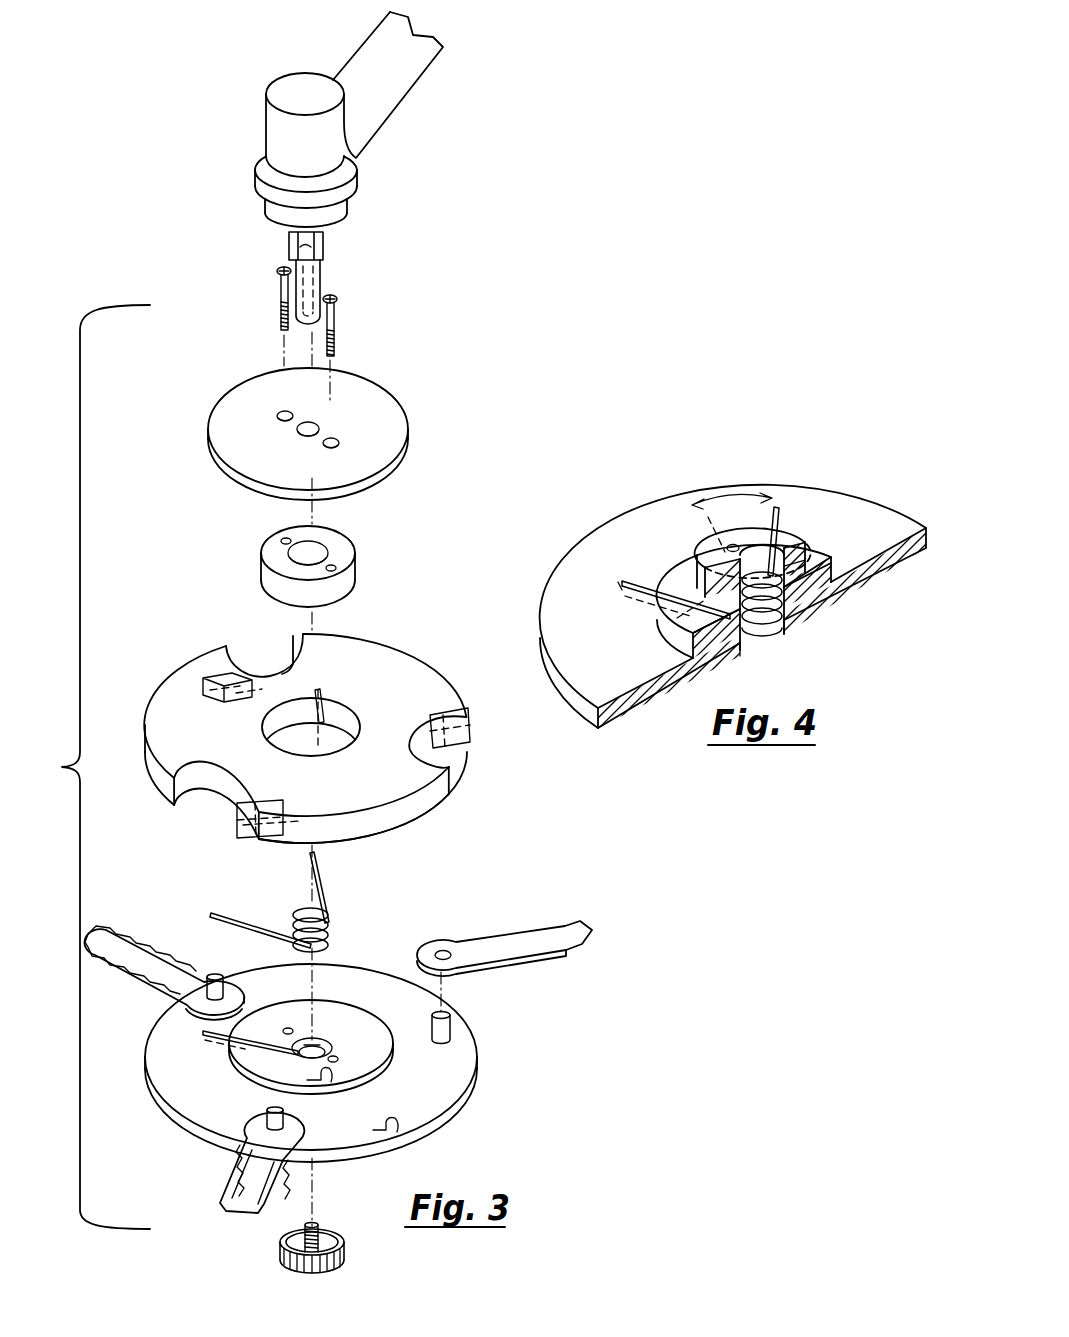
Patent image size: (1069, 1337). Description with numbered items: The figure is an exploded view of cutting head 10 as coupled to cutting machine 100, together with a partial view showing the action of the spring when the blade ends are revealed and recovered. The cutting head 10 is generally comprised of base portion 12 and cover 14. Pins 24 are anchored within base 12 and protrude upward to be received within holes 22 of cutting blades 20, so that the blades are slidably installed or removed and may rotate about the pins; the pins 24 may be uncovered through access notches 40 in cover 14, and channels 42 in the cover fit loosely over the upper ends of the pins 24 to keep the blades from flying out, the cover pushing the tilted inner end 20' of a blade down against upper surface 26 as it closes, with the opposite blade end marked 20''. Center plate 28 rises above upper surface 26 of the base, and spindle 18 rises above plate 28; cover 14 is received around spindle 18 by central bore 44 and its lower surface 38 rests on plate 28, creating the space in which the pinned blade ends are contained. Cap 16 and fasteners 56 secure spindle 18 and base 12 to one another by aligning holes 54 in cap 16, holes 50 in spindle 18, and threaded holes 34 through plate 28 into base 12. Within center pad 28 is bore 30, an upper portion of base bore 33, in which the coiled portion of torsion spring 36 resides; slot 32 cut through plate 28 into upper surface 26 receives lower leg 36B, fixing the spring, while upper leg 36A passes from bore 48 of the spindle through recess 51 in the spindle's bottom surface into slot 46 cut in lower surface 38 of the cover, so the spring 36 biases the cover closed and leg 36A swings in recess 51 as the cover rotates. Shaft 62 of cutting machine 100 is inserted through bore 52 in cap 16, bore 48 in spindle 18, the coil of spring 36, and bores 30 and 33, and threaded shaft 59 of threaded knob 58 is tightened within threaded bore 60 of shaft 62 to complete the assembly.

In FIG. 3, the cutting head 10 is at (62, 767).
In FIG. 3, the cutting machine 100 is at (396, 97).
In FIG. 3, the shaft 62 is at (295, 258).
In FIG. 3, the threaded bore 60 is at (310, 280).
In FIG. 3, the fasteners 56 is at (283, 302).
In FIG. 3, the cap 16 is at (370, 393).
In FIG. 3, the bore 52 is at (302, 434).
In FIG. 3, the holes 54 is at (281, 411).
In FIG. 3, the spindle 18 is at (343, 540).
In FIG. 4, the spindle 18 is at (795, 542).
In FIG. 3, the bore 48 is at (291, 554).
In FIG. 3, the holes 50 is at (283, 540).
In FIG. 3, the cover 14 is at (433, 800).
In FIG. 3, the lower surface 38 is at (393, 834).
In FIG. 3, the access notches 40 is at (277, 670).
In FIG. 3, the channels 42 is at (214, 669).
In FIG. 3, the central bore 44 is at (330, 756).
In FIG. 3, the slot 46 is at (322, 690).
In FIG. 3, the torsion spring 36 is at (329, 928).
In FIG. 4, the torsion spring 36 is at (786, 624).
In FIG. 3, the upper leg 36A is at (322, 880).
In FIG. 4, the upper leg 36A is at (778, 520).
In FIG. 3, the lower leg 36B is at (211, 914).
In FIG. 4, the lower leg 36B is at (677, 618).
In FIG. 3, the cutting blades 20 is at (354, 1057).
In FIG. 3, the inner end 20' is at (457, 905).
In FIG. 3, the lever free end 20'' is at (604, 977).
In FIG. 3, the holes 22 is at (441, 950).
In FIG. 3, the pins 24 is at (215, 978).
In FIG. 3, the base portion 12 is at (458, 1102).
In FIG. 4, the base portion 12 is at (570, 607).
In FIG. 3, the center plate 28 is at (331, 1082).
In FIG. 4, the center plate 28 is at (830, 600).
In FIG. 3, the bore 30 is at (331, 1039).
In FIG. 4, the bore 30 is at (748, 630).
In FIG. 3, the base bore 33 is at (313, 1045).
In FIG. 3, the threaded holes 34 is at (288, 1028).
In FIG. 3, the slot 32 is at (252, 1043).
In FIG. 4, the slot 32 is at (670, 583).
In FIG. 3, the upper surface 26 is at (397, 1132).
In FIG. 3, the threaded knob 58 is at (345, 1252).
In FIG. 3, the threaded shaft 59 is at (305, 1241).
In FIG. 4, the recess 51 is at (792, 565).